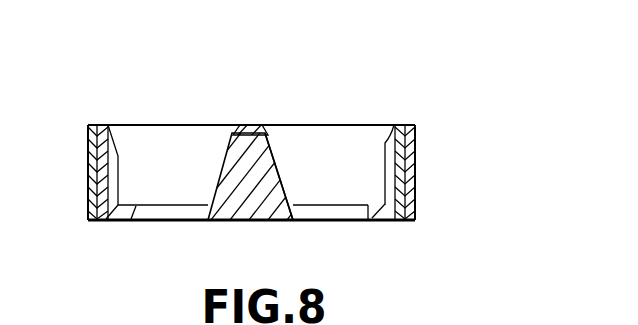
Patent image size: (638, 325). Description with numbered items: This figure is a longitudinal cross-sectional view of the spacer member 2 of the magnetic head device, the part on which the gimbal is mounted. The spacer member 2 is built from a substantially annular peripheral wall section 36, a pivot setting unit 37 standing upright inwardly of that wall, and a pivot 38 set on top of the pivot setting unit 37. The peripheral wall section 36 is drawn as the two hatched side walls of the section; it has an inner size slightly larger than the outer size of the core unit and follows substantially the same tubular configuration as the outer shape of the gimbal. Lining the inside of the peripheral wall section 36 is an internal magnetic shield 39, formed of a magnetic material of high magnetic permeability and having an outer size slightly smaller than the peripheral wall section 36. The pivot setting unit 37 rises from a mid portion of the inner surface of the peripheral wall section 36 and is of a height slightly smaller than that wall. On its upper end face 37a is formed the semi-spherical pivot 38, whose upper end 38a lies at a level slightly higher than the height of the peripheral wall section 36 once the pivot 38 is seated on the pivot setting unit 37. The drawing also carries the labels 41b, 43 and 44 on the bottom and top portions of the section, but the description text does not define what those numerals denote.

The spacer member 2 is at (302, 157).
The peripheral wall section 36 is at (408, 122).
The pivot setting unit 37 is at (263, 160).
The upper end face 37a is at (267, 138).
The pivot 38 is at (240, 126).
The upper end 38a is at (251, 125).
The internal magnetic shield 39 is at (103, 124).
The bottom plate portion 41b is at (333, 218).
The top surface 43 is at (172, 118).
The bottom plate portion 44 is at (150, 234).